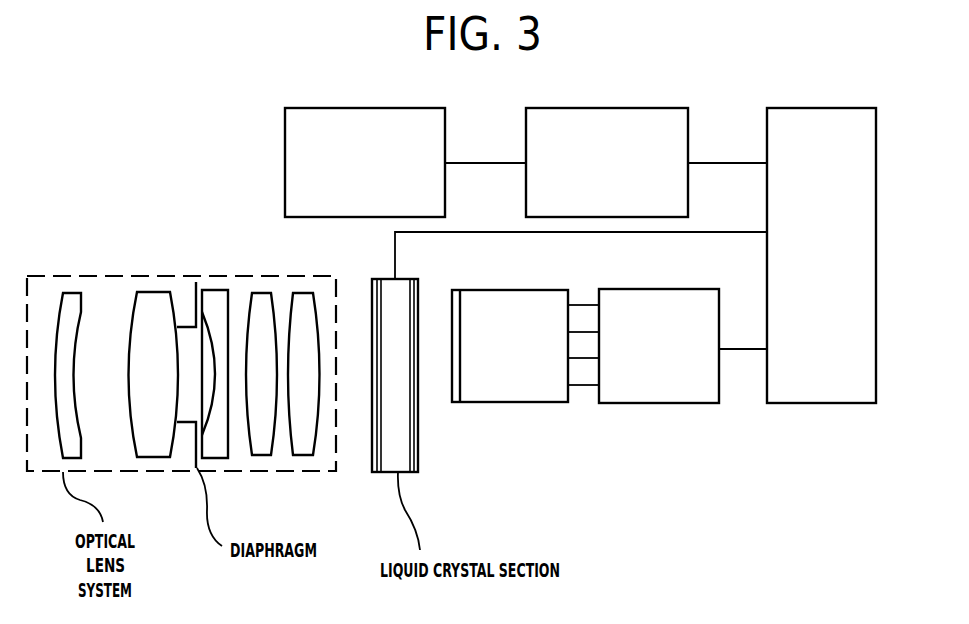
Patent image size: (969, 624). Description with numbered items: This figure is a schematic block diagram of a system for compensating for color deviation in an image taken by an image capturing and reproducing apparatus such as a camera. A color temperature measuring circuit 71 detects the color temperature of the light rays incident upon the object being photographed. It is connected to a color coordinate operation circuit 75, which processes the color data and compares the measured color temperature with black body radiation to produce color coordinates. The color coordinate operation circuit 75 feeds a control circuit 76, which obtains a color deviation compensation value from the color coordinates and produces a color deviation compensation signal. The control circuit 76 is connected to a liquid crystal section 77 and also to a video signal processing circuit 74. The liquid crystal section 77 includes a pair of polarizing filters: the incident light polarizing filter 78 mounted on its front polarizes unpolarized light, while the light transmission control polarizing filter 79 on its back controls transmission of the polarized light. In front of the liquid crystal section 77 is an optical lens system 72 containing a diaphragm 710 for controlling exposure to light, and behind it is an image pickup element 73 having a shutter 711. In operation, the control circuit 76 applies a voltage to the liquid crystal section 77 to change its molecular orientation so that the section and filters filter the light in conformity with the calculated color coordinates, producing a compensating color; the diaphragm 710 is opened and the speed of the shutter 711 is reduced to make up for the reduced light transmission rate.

The color temperature measuring circuit 71 is at (290, 108).
The optical lens system 72 is at (277, 471).
The image pickup element 73 is at (467, 399).
The video signal processing circuit 74 is at (693, 289).
The color coordinate operation circuit 75 is at (594, 108).
The control circuit 76 is at (797, 108).
The liquid crystal section 77 is at (386, 472).
The incident light polarizing filter 78 is at (373, 282).
The light transmission control polarizing filter 79 is at (410, 472).
The diaphragm 710 is at (196, 298).
The shutter 711 is at (456, 296).